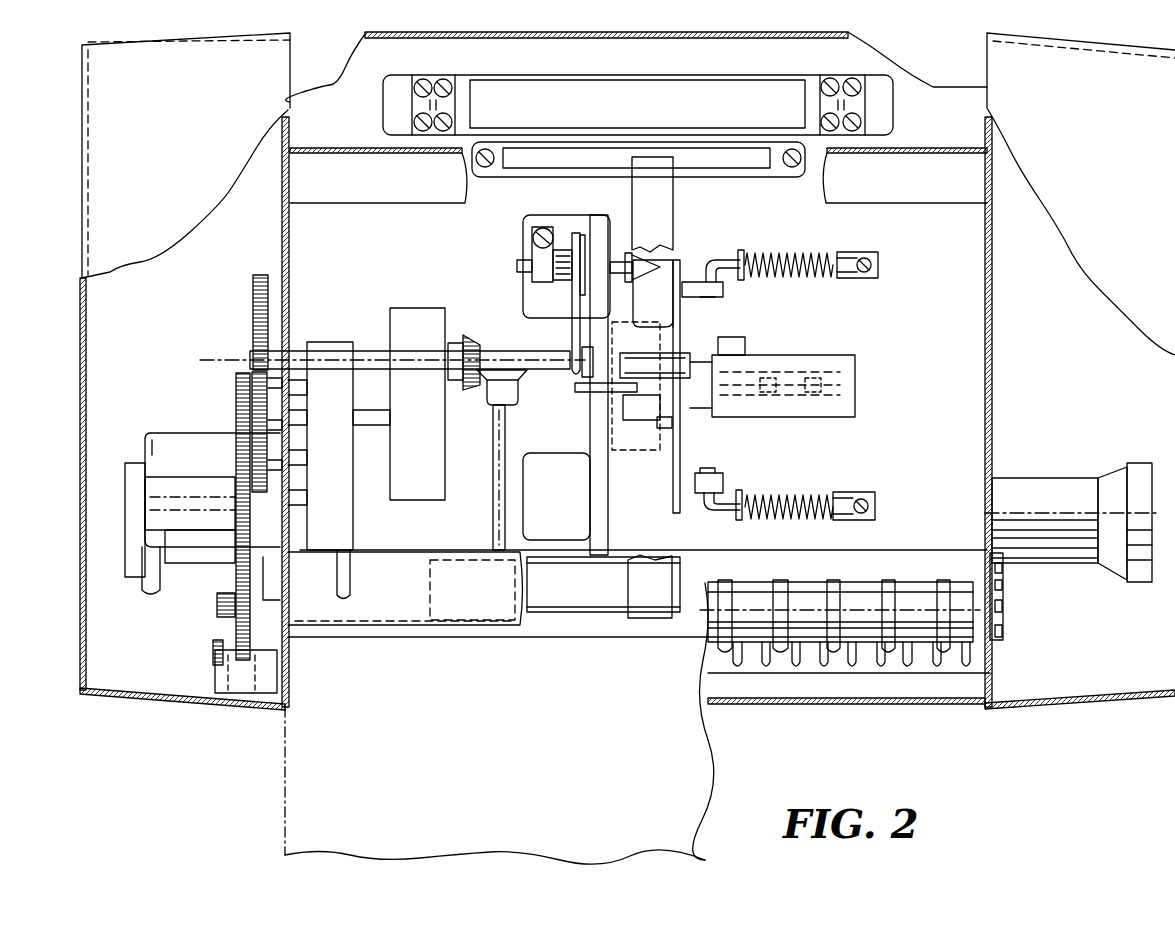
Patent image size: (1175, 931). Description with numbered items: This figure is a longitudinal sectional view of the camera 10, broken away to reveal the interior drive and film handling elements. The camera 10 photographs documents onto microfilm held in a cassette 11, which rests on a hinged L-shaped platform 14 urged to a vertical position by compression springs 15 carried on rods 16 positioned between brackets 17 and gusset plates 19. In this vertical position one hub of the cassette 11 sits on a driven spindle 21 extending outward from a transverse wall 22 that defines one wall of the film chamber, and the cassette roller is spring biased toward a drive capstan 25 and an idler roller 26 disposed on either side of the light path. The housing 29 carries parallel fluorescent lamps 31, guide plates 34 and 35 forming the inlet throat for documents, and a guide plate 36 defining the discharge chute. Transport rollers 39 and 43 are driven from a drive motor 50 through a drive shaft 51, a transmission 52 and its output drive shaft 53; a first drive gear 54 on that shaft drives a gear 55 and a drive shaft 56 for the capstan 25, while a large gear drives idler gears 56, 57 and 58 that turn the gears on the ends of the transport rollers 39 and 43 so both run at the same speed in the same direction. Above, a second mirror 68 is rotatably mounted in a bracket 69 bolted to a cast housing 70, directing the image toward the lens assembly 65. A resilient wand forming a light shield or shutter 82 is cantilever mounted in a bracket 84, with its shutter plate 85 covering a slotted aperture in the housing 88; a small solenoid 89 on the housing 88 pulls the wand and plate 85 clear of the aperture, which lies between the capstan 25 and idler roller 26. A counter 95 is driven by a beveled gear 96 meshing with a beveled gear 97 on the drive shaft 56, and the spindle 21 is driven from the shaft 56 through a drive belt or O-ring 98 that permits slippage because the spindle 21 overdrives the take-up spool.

The camera 10 is at (78, 208).
The cassette 11 is at (675, 205).
The L-shaped platform 14 is at (683, 318).
The compression springs 15 is at (787, 262).
The rods 16 is at (720, 258).
The brackets 17 is at (850, 252).
The gusset plates 19 is at (722, 292).
The driven spindle 21 is at (660, 262).
The transverse wall 22 is at (620, 215).
The drive capstan 25 is at (637, 355).
The idler roller 26 is at (647, 420).
The housing 29 is at (1090, 247).
The fluorescent lamps 31 is at (1107, 493).
The guide plate 34 is at (592, 598).
The guide plate 35 is at (930, 563).
The guide plate 36 is at (867, 667).
The transport roller 39 is at (835, 584).
The transport roller 43 is at (847, 640).
The drive motor 50 is at (417, 404).
The drive shaft 51 is at (383, 420).
The transmission 52 is at (310, 470).
The drive shaft 53 is at (233, 458).
The first drive gear 54 is at (262, 475).
The gear 55 is at (255, 290).
The drive shaft 56 is at (370, 350).
The idler gear 57 is at (235, 603).
The idler gear 58 is at (238, 650).
The lens assembly 65 is at (623, 385).
The second mirror 68 is at (748, 95).
The bracket 69 is at (808, 82).
The cast housing 70 is at (863, 100).
The light shield or shutter 82 is at (788, 365).
The bracket 84 is at (813, 397).
The shutter plate 85 is at (660, 400).
The housing 88 is at (768, 397).
The solenoid 89 is at (738, 343).
The counter 95 is at (430, 590).
The beveled gear 96 is at (510, 385).
The beveled gear 97 is at (480, 345).
The drive belt or O-ring 98 is at (575, 335).